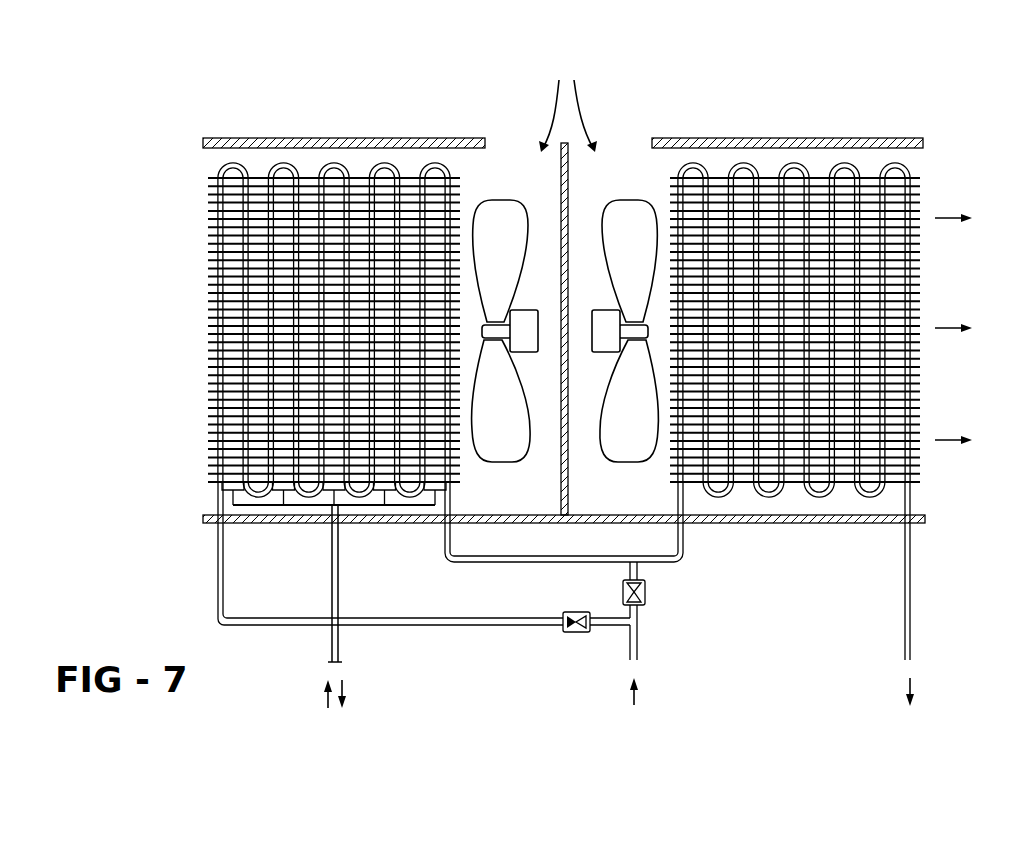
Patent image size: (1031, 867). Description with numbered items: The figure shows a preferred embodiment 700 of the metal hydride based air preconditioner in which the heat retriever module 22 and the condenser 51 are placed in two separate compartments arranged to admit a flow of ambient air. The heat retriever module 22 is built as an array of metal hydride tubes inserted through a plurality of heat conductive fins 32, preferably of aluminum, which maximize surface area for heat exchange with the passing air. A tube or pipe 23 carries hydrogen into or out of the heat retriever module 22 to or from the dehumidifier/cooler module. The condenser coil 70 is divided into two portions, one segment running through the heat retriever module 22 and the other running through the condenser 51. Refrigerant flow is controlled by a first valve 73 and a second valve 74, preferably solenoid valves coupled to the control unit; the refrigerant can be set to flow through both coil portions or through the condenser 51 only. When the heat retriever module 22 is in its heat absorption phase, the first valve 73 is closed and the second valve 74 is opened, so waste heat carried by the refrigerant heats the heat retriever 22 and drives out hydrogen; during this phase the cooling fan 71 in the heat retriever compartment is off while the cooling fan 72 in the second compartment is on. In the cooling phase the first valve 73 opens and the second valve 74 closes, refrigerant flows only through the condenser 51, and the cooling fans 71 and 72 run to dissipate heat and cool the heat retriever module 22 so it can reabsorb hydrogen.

The heat retriever module integrated with a condenser in separate compartments 700 is at (112, 141).
The heat retriever module 22 is at (226, 241).
The heat conductive fins 32 is at (215, 343).
The condenser coil 70 is at (232, 500).
The condenser 51 is at (942, 195).
The cooling fan 71 is at (502, 214).
The cooling fan 72 is at (612, 212).
The tube or pipe 23 is at (338, 578).
The first valve 73 is at (645, 585).
The second valve 74 is at (573, 632).